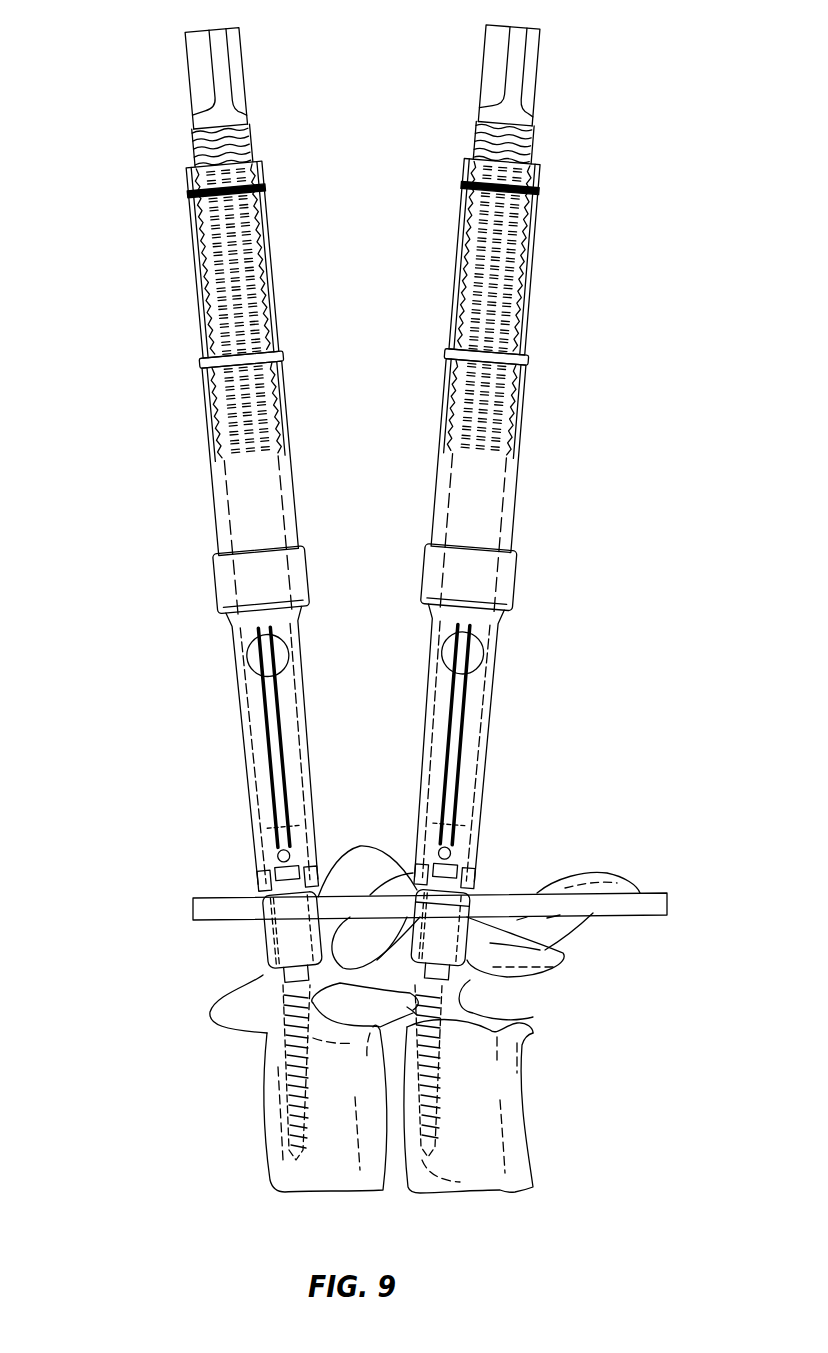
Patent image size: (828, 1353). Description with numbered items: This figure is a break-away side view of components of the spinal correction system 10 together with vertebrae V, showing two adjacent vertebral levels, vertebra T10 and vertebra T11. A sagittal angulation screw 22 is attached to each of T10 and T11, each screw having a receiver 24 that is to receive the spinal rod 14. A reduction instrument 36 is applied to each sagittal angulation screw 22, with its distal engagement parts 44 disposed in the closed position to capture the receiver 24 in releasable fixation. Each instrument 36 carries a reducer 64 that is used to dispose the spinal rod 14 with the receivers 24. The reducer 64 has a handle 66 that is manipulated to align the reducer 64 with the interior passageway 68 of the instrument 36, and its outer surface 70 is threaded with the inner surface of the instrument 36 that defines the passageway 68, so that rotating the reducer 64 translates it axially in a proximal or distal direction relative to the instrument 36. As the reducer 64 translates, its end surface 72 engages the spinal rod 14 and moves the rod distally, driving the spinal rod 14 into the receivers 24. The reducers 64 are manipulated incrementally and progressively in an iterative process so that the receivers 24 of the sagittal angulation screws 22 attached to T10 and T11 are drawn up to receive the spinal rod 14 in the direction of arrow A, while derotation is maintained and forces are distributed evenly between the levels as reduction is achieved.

The spinal correction system 10 is at (70, 325).
The spinal rod 14 is at (647, 908).
The sagittal angulation screw 22 is at (292, 957).
The receiver 24 is at (290, 915).
The reduction instrument 36 is at (205, 488).
The distal engagement part 44 is at (447, 920).
The reducer 64 is at (187, 80).
The handle 66 is at (200, 118).
The interior passageway 68 is at (450, 495).
The outer surface 70 is at (473, 145).
The end surface 72 is at (384, 852).
The arrow A is at (367, 712).
The vertebrae V is at (172, 1064).
The vertebra T10 is at (290, 1167).
The vertebra T11 is at (483, 1150).